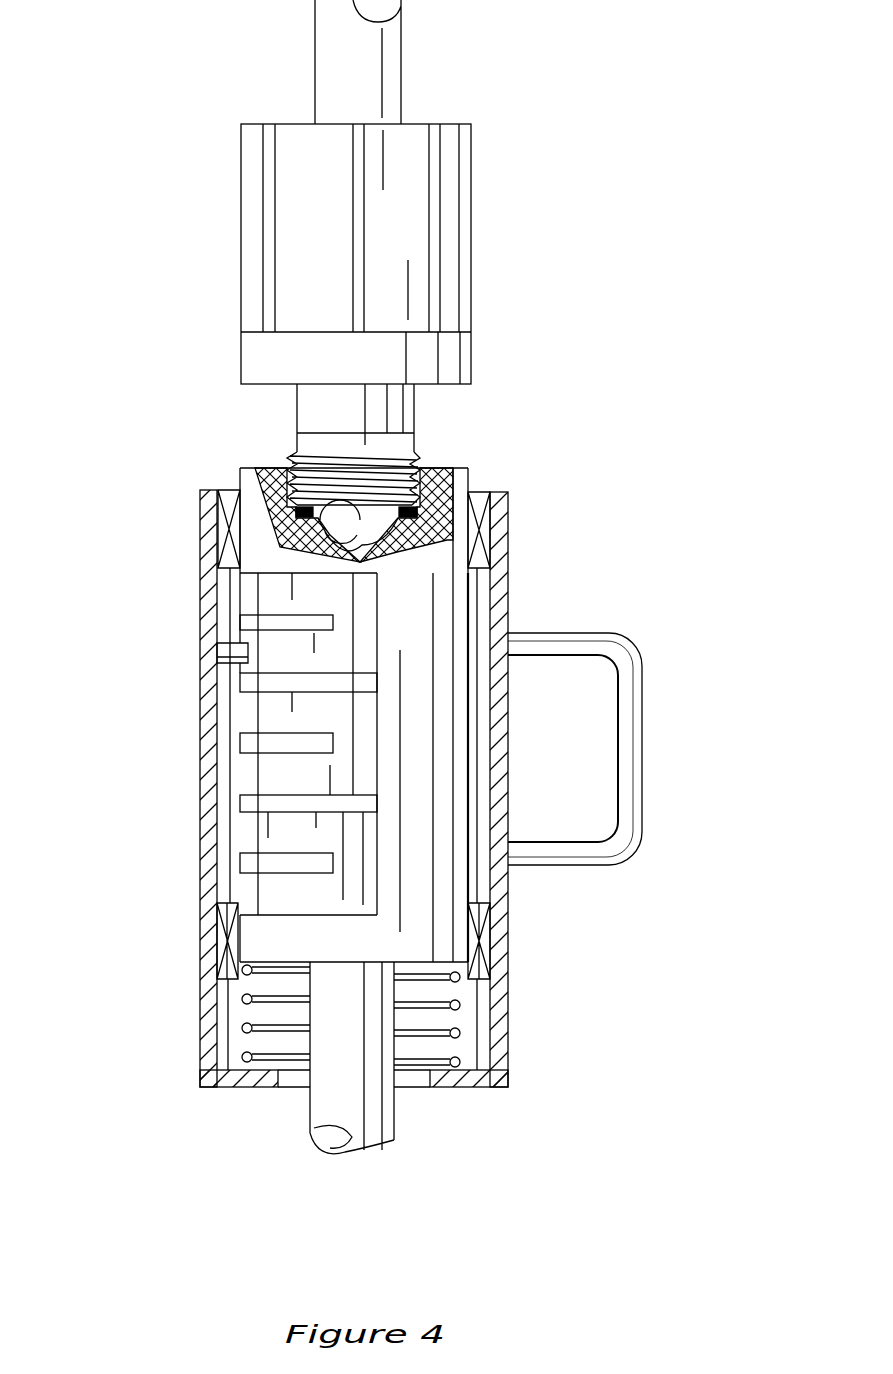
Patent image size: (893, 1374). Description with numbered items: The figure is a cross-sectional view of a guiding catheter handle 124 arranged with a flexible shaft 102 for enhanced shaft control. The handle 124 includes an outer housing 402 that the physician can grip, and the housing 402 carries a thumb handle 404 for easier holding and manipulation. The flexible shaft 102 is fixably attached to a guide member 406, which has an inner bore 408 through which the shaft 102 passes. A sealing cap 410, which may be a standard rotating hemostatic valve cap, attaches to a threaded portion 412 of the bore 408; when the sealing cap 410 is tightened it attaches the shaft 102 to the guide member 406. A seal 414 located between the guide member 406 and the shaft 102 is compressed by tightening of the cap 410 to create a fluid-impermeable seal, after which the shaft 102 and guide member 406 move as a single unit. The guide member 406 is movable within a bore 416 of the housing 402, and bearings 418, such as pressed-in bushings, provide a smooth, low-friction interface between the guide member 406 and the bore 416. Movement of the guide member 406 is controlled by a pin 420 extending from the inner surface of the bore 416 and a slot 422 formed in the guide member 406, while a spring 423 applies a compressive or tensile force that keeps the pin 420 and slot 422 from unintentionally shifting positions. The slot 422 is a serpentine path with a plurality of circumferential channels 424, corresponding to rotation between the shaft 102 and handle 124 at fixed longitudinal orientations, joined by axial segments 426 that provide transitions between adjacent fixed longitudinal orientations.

The flexible shaft 102 is at (315, 62).
The handle 124 is at (600, 993).
The outer housing 402 is at (205, 590).
The thumb handle 404 is at (628, 642).
The guide member 406 is at (468, 476).
The inner bore 408 is at (363, 545).
The sealing cap 410 is at (468, 258).
The threaded portion 412 is at (287, 478).
The seal 414 is at (296, 512).
The bore 416 is at (227, 1033).
The bearings 418 is at (230, 540).
The pin 420 is at (230, 643).
The slot 422 is at (240, 772).
The spring 423 is at (453, 1033).
The circumferential channels 424 is at (273, 722).
The axial segments 426 is at (353, 627).